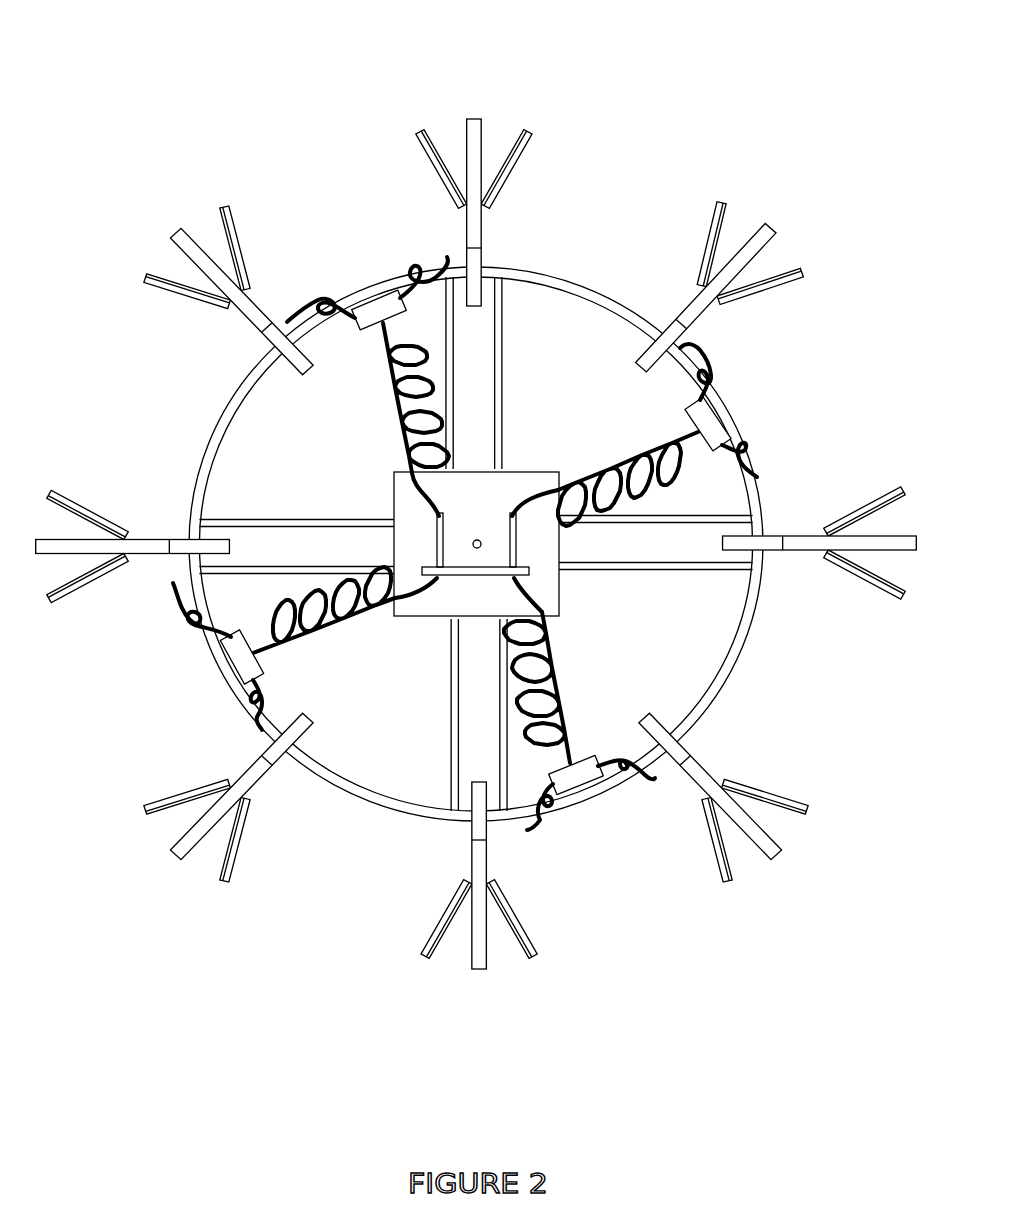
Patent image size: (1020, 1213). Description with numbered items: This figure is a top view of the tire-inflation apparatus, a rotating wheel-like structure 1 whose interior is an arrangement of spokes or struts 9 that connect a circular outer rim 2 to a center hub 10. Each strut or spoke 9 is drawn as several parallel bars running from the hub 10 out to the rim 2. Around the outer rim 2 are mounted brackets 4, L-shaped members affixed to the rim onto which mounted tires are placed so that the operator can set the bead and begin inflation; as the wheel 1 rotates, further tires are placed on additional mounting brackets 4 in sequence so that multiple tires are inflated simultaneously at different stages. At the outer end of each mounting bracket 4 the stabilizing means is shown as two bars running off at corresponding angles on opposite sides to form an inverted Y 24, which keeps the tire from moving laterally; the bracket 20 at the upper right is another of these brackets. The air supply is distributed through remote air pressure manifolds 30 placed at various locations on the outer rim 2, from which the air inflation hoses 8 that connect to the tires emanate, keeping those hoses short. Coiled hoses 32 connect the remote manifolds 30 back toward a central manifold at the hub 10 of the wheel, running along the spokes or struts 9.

The wheel-like structure 1 is at (476, 489).
The outer rim 2 is at (476, 544).
The mounting bracket 4 is at (479, 875).
The air inflation hose 8 is at (419, 262).
The spokes or struts 9 is at (475, 544).
The center hub 10 is at (410, 558).
The leg spike 20 is at (706, 298).
The inverted Y 24 is at (710, 786).
The remote air pressure manifold 30 is at (240, 660).
The hose 32 is at (617, 455).